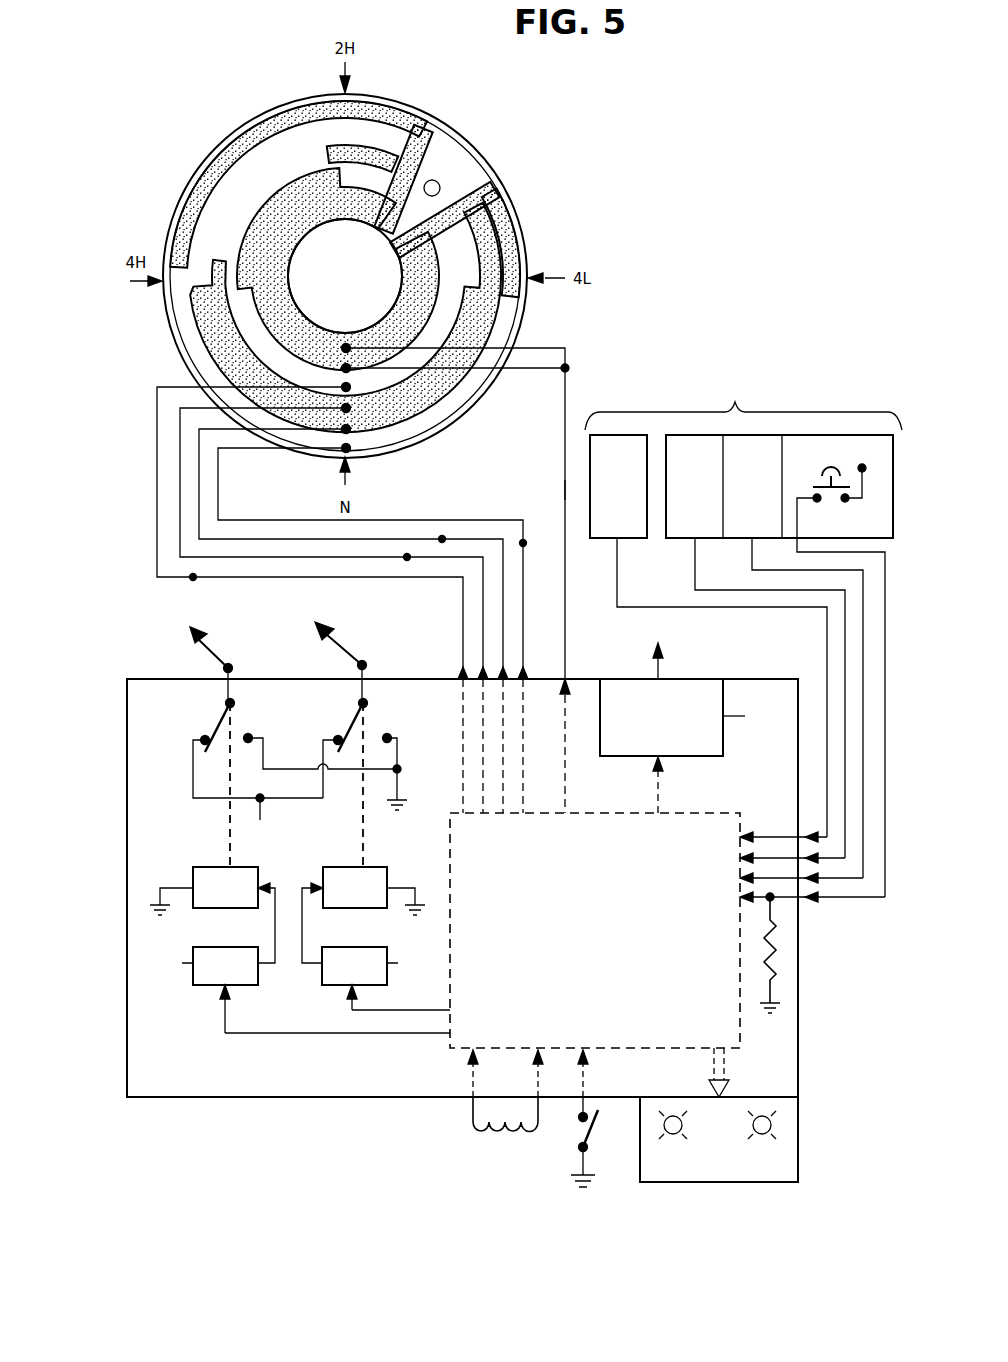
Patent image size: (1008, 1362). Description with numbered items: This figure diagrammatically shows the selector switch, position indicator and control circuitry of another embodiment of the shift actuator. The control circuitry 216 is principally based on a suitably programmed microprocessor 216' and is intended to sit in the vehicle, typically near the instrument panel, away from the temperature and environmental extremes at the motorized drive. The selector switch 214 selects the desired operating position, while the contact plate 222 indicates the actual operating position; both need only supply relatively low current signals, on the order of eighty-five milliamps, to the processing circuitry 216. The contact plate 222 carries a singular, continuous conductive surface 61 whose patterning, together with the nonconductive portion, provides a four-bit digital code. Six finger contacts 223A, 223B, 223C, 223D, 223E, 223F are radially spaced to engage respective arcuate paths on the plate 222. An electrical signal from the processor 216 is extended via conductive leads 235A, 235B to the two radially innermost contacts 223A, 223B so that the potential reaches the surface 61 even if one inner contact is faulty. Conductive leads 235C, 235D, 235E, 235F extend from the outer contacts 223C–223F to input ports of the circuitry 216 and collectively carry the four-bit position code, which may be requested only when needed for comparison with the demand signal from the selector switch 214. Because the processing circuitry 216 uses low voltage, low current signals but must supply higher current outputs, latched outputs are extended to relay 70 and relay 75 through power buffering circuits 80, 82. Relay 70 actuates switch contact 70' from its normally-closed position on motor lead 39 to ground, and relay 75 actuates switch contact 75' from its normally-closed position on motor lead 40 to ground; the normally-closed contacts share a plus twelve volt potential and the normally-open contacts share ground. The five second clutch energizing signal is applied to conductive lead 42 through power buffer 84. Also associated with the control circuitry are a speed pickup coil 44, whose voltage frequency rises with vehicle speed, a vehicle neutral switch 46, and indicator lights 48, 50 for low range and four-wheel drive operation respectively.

The conductive surface 61 is at (199, 174).
The contact plate 222 is at (517, 217).
The finger contact 223A is at (348, 345).
The finger contact 223B is at (341, 365).
The finger contact 223C is at (351, 387).
The finger contact 223D is at (346, 408).
The finger contact 223E is at (351, 429).
The finger contact 223F is at (340, 453).
The conductive lead 235A is at (526, 641).
The conductive lead 235B is at (566, 483).
The conductive lead 235C is at (193, 580).
The conductive lead 235D is at (407, 560).
The conductive lead 235E is at (455, 505).
The conductive lead 235F is at (545, 507).
The selector switch 214 is at (743, 637).
The motor lead 39 is at (224, 664).
The motor lead 40 is at (340, 633).
The switch contact 70' is at (289, 750).
The switch contact 75' is at (372, 750).
The relay 70 is at (212, 896).
The relay 75 is at (363, 896).
The power buffering circuit 80 is at (213, 978).
The power buffering circuit 82 is at (342, 978).
The power buffer 84 is at (718, 752).
The conductive lead 42 is at (663, 673).
The control circuitry 216 is at (462, 927).
The microprocessor 216' is at (595, 930).
The speed pickup coil 44 is at (472, 1118).
The vehicle neutral switch 46 is at (580, 1130).
The indicator light 48 is at (684, 1125).
The indicator light 50 is at (771, 1123).